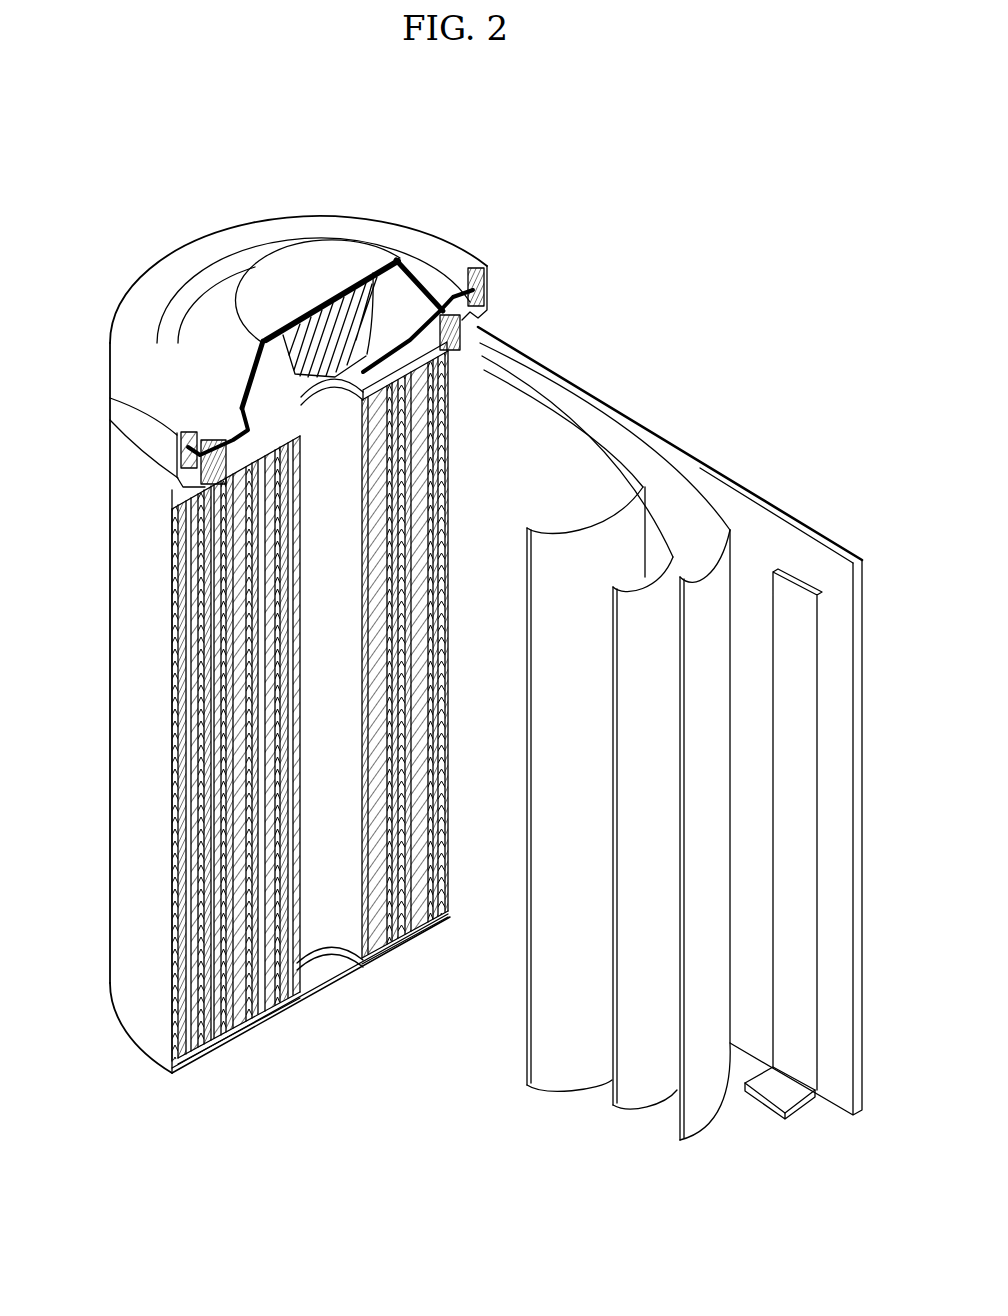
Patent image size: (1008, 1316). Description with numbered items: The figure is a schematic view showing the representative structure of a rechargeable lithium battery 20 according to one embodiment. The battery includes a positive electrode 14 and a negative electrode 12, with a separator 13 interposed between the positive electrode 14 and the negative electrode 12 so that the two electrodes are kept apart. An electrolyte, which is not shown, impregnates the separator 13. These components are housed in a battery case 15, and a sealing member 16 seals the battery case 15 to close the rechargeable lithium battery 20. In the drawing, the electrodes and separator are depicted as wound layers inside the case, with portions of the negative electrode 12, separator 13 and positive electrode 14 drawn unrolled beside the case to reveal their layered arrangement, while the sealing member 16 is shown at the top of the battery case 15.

The negative electrode 12 is at (795, 526).
The separator 13 is at (610, 450).
The positive electrode 14 is at (668, 510).
The battery case 15 is at (135, 755).
The sealing member 16 is at (308, 263).
The rechargeable lithium battery 20 is at (603, 269).